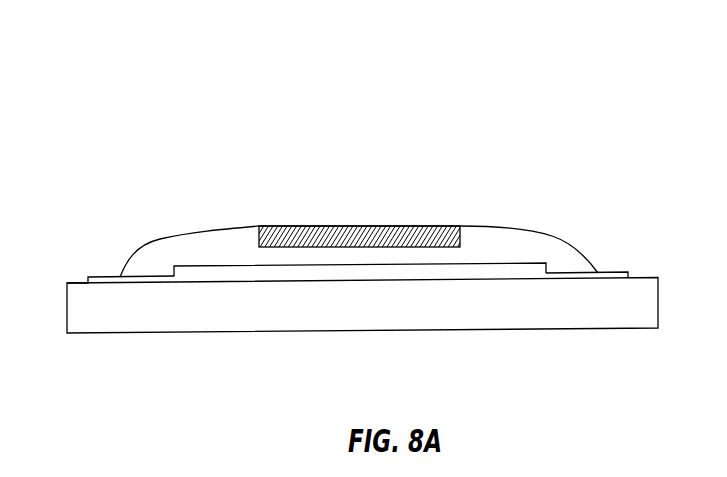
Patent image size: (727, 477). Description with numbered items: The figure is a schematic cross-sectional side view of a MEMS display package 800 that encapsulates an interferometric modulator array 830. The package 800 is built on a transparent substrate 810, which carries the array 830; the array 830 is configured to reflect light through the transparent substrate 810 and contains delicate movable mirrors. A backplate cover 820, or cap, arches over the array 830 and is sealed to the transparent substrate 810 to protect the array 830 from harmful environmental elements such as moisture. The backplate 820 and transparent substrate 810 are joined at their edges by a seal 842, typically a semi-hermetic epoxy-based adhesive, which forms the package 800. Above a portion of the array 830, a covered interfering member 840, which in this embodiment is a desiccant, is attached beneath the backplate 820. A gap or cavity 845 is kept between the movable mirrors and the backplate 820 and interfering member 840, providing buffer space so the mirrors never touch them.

The MEMS display package 800 is at (136, 57).
The transparent substrate 810 is at (577, 331).
The backplate cover 820 is at (543, 229).
The interferometric modulator array 830 is at (238, 277).
The interfering member 840 is at (403, 226).
The seal 842 is at (110, 276).
The gap or cavity 845 is at (280, 255).